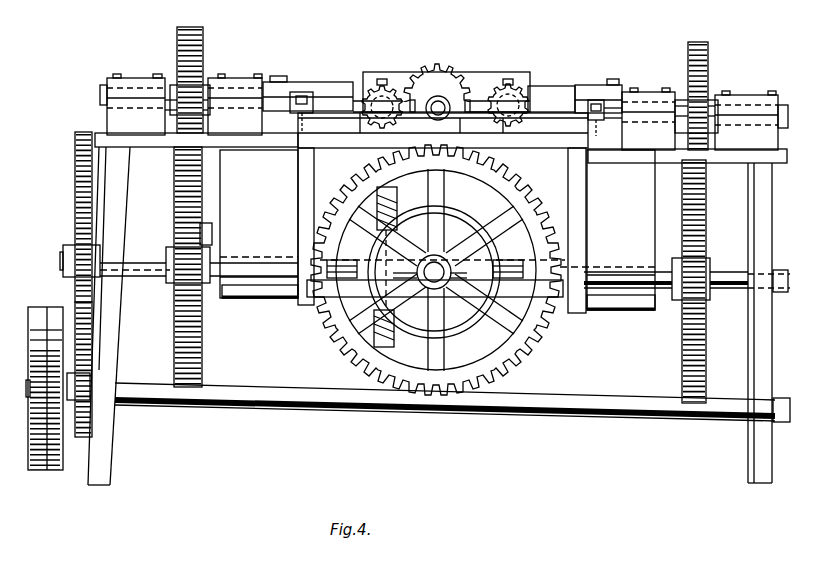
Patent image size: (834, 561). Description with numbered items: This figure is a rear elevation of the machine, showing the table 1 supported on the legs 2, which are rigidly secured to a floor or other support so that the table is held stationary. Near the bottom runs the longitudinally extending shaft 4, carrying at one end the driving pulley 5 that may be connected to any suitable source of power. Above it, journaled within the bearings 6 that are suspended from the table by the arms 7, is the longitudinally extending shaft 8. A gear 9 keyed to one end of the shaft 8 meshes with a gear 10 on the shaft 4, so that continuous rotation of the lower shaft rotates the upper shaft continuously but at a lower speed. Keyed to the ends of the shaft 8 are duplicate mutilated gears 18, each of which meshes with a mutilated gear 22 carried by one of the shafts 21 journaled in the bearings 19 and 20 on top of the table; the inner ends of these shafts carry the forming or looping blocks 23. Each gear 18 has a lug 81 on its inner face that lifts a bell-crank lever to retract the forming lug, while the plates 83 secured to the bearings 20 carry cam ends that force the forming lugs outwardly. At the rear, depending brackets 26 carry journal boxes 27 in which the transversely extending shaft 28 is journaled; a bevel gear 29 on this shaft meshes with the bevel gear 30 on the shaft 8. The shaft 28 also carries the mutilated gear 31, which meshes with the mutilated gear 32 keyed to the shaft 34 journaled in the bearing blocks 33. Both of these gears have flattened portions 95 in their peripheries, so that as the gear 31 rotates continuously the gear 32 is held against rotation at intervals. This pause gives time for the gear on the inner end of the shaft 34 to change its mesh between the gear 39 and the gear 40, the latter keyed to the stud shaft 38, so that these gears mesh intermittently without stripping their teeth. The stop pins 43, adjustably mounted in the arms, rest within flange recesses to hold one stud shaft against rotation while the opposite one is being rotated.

The table 1 is at (777, 160).
The legs 2 is at (106, 445).
The longitudinally extending shaft 4 is at (562, 408).
The driving pulley 5 is at (42, 306).
The bearings 6 is at (250, 300).
The arms 7 is at (437, 230).
The longitudinally extending shaft 8 is at (714, 290).
The gear 9 is at (74, 193).
The gear 10 is at (80, 440).
The mutilated gears 18 is at (173, 330).
The bearings 19 is at (128, 82).
The bearings 20 is at (237, 80).
The shafts 21 is at (100, 96).
The mutilated gear 22 is at (205, 32).
The forming or looping blocks 23 is at (330, 82).
The depending brackets 26 is at (297, 210).
The journal boxes 27 is at (466, 300).
The transversely extending shaft 28 is at (446, 262).
The bevel gear 29 is at (455, 332).
The bevel gear 30 is at (386, 340).
The mutilated gear 31 is at (530, 382).
The mutilated gear 32 is at (428, 66).
The bearing blocks 33 is at (442, 93).
The shaft 34 is at (447, 98).
The stud shaft 38 is at (531, 68).
The gear 39 is at (373, 118).
The gear 40 is at (518, 120).
The stop pins 43 is at (316, 91).
The lug 81 is at (212, 235).
The plates 83 is at (277, 76).
The flattened portions 95 is at (436, 144).